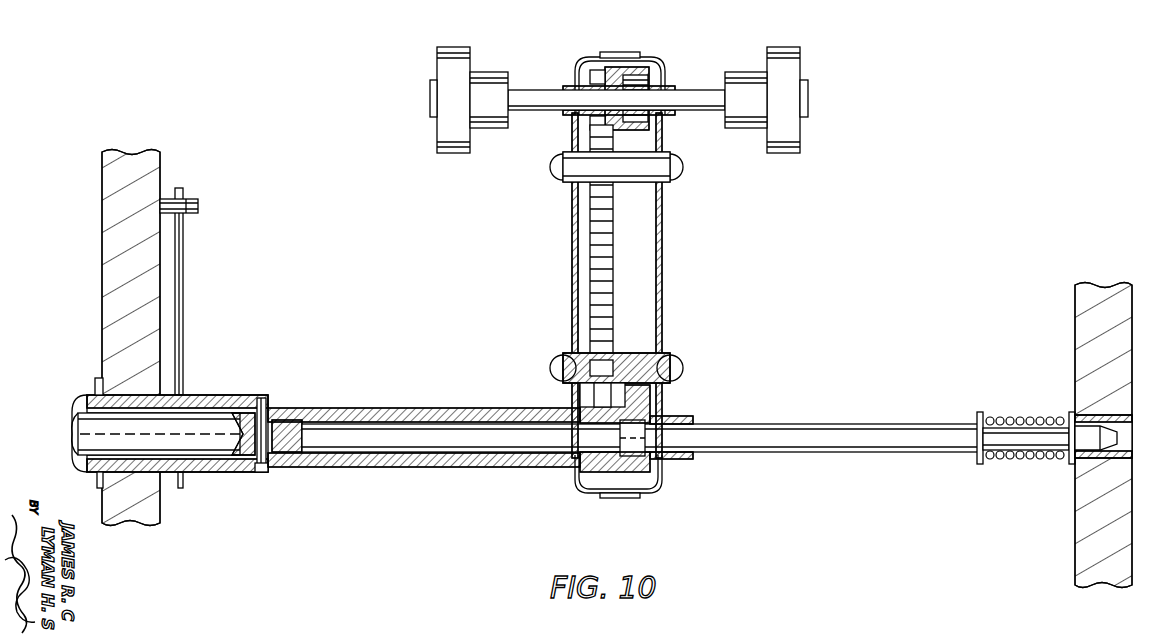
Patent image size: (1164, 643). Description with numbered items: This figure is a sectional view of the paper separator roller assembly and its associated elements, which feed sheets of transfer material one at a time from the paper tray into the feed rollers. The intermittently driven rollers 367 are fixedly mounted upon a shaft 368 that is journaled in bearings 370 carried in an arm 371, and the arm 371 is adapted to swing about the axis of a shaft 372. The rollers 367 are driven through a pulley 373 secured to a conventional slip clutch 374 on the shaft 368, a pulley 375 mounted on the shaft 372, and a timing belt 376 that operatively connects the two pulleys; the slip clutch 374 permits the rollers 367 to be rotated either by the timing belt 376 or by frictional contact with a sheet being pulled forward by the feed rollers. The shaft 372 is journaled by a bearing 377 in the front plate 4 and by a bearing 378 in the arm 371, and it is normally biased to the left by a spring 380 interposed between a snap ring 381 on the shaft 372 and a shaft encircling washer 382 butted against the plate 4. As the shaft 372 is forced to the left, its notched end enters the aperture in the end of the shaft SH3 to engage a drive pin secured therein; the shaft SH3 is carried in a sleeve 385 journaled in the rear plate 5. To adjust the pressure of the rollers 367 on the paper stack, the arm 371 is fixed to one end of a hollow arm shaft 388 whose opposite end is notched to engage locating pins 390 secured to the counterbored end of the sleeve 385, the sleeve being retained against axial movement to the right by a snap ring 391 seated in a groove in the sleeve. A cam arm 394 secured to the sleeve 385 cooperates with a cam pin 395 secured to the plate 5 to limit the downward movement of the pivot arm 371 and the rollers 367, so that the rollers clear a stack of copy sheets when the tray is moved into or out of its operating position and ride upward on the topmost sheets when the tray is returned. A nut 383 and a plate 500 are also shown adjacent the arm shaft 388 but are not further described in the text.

The front plate 4 is at (1100, 285).
The rear plate 5 is at (102, 248).
The shaft SH3 is at (75, 438).
The intermittently driven rollers 367 is at (455, 48).
The shaft 368 is at (545, 90).
The bearings 370 is at (570, 114).
The arm 371 is at (662, 248).
The shaft 372 is at (778, 422).
The pulley 373 is at (588, 62).
The slip clutch 374 is at (648, 62).
The pulley 375 is at (578, 402).
The timing belt 376 is at (590, 248).
The bearing 377 is at (1085, 418).
The bearing 378 is at (672, 415).
The spring 380 is at (1020, 458).
The snap ring 381 is at (976, 414).
The shaft encircling washer 382 is at (1069, 460).
The nut 383 is at (277, 410).
The sleeve 385 is at (205, 468).
The hollow arm shaft 388 is at (406, 408).
The locating pins 390 is at (262, 472).
The snap ring 391 is at (96, 386).
The cam arm 394 is at (184, 278).
The cam pin 395 is at (199, 206).
The plate 500 is at (258, 398).